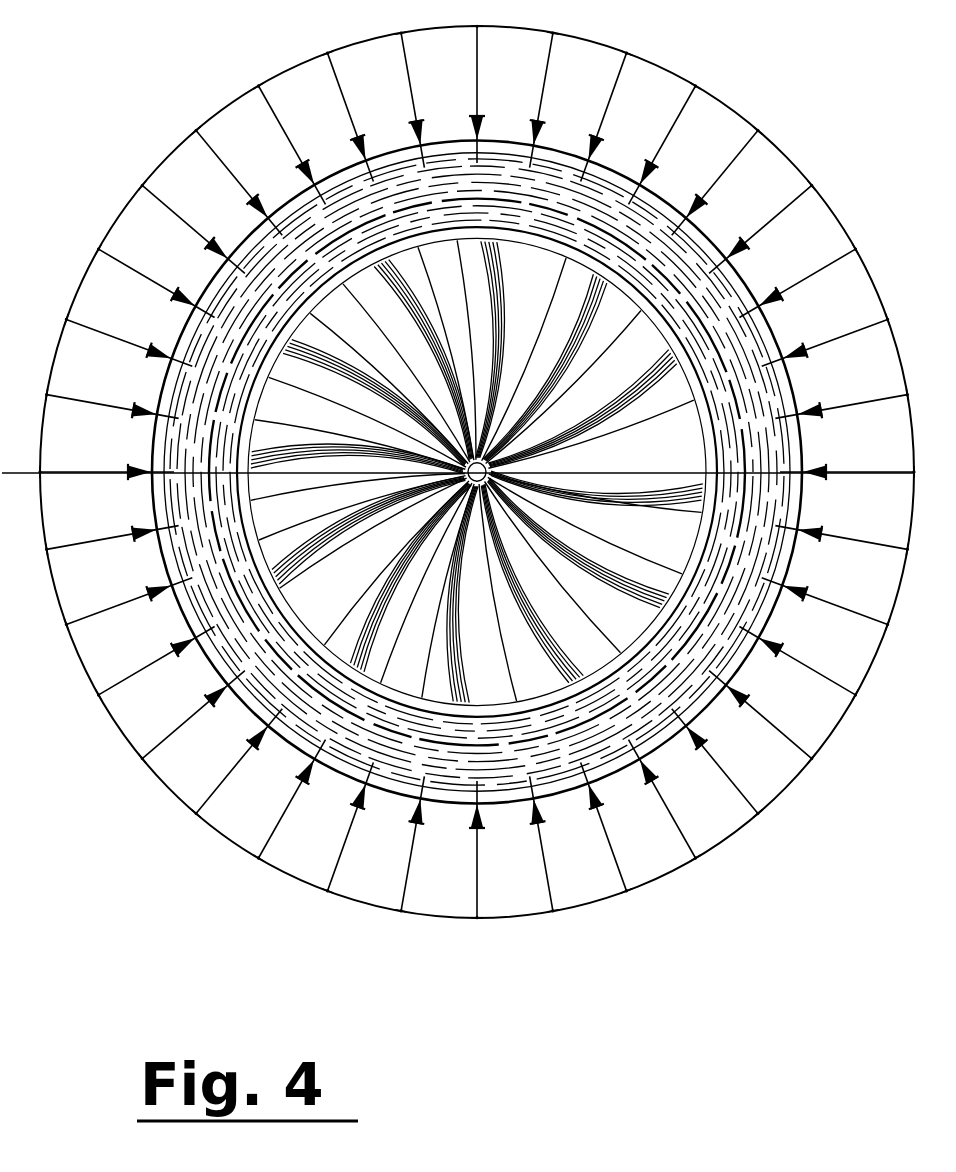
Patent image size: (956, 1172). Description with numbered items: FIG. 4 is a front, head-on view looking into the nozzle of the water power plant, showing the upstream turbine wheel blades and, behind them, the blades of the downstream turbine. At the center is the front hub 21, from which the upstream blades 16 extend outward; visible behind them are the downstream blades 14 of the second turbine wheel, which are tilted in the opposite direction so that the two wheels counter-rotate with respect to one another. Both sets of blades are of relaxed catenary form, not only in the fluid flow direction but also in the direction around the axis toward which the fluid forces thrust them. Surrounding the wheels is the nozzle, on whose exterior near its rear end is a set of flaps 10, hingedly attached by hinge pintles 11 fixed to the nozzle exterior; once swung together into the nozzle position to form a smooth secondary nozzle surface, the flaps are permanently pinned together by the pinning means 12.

The flaps 10 is at (648, 130).
The hinge pintles 11 is at (810, 466).
The pinning means 12 is at (887, 620).
The downstream blades 14 is at (551, 310).
The upstream blades 16 is at (501, 269).
The front hub 21 is at (408, 514).